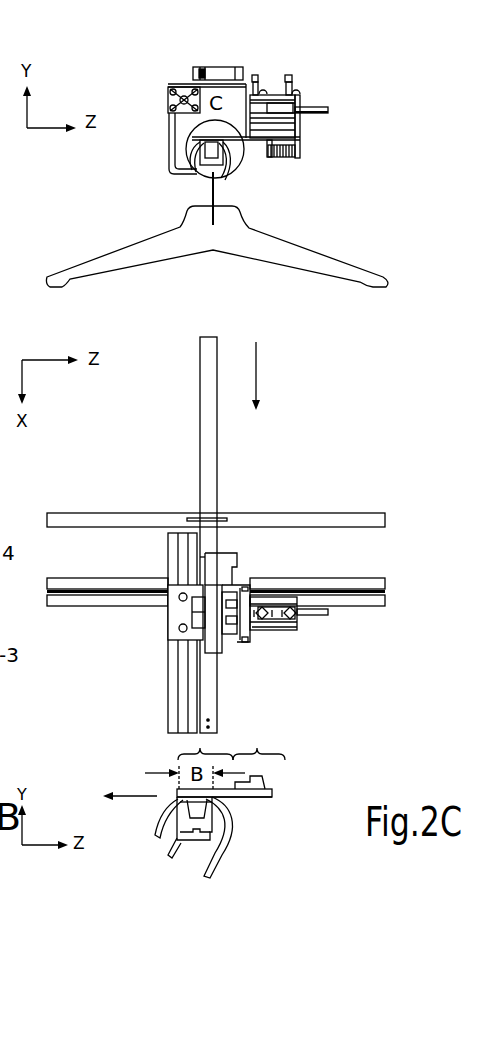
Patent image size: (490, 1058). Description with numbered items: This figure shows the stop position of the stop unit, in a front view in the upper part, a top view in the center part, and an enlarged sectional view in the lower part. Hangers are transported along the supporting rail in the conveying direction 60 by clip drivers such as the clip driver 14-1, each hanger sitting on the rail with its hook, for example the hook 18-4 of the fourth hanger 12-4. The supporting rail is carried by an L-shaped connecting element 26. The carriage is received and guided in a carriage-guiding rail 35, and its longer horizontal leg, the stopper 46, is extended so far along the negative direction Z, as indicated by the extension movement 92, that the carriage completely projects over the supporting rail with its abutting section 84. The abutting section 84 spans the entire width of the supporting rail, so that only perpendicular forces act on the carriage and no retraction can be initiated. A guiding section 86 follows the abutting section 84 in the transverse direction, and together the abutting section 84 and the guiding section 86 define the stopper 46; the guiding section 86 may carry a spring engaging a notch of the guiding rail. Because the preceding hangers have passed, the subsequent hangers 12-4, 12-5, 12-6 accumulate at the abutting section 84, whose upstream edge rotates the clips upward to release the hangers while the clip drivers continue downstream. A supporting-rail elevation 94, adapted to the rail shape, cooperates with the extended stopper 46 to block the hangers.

The clip driver 14-1 is at (138, 243).
The conveying direction 60 is at (256, 367).
The hanger 12-6 is at (388, 515).
The hanger 12-5 is at (388, 582).
The hanger 12-4 is at (388, 600).
The abutting section 84 is at (197, 750).
The guiding section 86 is at (258, 750).
The extension movement 92 is at (137, 793).
The supporting-rail elevation 94 is at (180, 802).
The connecting element 26 is at (168, 849).
The hook 18-4 is at (231, 845).
The stopper 46 is at (267, 797).
The carriage-guiding rail 35 is at (267, 781).